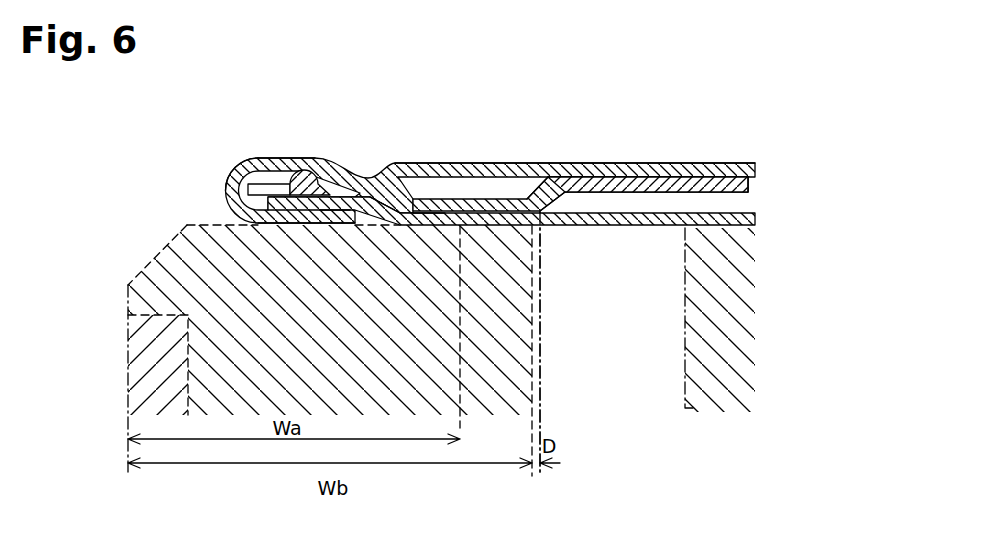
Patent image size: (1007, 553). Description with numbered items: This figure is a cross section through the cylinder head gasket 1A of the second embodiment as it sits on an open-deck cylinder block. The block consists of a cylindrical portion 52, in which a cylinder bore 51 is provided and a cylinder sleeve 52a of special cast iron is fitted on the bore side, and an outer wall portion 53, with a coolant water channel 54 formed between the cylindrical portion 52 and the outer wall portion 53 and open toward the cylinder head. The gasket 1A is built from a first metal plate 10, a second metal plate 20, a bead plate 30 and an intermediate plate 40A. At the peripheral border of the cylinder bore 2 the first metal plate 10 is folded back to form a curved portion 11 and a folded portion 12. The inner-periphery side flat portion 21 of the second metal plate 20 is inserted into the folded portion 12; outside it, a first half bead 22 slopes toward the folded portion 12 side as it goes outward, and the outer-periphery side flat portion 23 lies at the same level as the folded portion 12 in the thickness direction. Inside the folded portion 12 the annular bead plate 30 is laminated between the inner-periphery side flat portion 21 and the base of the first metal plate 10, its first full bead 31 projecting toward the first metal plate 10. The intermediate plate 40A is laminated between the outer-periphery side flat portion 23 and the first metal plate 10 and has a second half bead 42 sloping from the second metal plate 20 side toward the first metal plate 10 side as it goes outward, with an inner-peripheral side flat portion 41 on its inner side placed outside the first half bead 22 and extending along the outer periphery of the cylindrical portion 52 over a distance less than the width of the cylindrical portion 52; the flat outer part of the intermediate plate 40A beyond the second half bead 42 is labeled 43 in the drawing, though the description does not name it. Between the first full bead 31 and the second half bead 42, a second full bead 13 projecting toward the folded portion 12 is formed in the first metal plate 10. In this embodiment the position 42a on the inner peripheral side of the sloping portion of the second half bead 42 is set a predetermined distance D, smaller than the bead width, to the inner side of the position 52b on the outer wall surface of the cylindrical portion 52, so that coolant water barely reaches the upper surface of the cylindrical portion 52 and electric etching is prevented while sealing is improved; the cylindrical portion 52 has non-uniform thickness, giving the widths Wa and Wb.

The cylinder head gasket 1A is at (529, 304).
The cylinder bore 2 is at (485, 182).
The first metal plate 10 is at (722, 163).
The curved portion 11 is at (231, 170).
The folded portion 12 is at (302, 223).
The second full bead 13 is at (346, 168).
The second metal plate 20 is at (551, 240).
The inner-periphery side flat portion 21 is at (335, 221).
The first half bead 22 is at (385, 223).
The outer-periphery side flat portion 23 is at (432, 221).
The bead plate 30 is at (264, 160).
The first full bead 31 is at (296, 178).
The intermediate plate 40A is at (750, 186).
The inner-peripheral side flat portion 41 is at (639, 161).
The second half bead 42 is at (550, 183).
The position on the inner peripheral side of the sloping portion 42a is at (550, 227).
The upper conductor portion 43 is at (610, 185).
The cylinder bore 51 is at (66, 365).
The cylindrical portion 52 is at (395, 333).
The cylinder sleeve 52a is at (177, 365).
The position on the outer peripheral side 52b is at (538, 477).
The outer wall portion 53 is at (714, 337).
The coolant water channel 54 is at (597, 337).